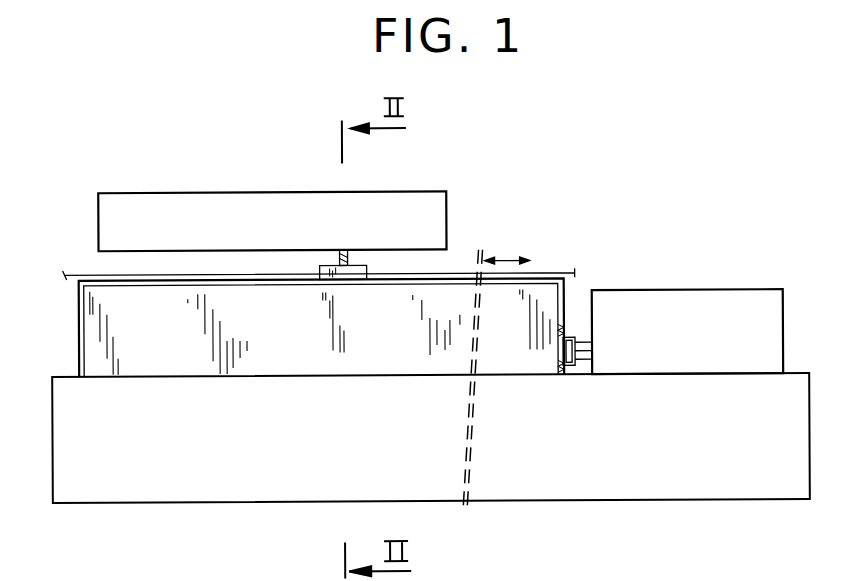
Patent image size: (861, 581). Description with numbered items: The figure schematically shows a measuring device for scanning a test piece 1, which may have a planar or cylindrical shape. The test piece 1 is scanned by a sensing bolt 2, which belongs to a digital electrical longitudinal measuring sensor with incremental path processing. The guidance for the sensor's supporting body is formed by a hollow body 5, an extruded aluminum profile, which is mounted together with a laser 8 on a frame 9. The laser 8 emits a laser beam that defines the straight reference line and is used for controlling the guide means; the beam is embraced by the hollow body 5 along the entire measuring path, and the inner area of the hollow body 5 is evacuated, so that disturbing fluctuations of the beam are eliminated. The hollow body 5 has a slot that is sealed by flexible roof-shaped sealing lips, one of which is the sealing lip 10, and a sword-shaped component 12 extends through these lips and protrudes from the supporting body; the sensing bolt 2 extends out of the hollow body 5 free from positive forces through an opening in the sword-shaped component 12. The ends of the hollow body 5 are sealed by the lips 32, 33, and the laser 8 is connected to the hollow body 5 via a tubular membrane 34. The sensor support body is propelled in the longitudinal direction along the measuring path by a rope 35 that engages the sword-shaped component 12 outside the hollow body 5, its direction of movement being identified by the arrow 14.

The test piece 1 is at (178, 212).
The sensing bolt 2 is at (325, 264).
The hollow body 5 is at (144, 303).
The laser 8 is at (753, 308).
The frame 9 is at (793, 388).
The sealing lip 10 is at (380, 285).
The sword-shaped component 12 is at (320, 273).
The arrow 14 is at (505, 257).
The lip 32 is at (79, 331).
The lip 33 is at (567, 333).
The tubular membrane 34 is at (571, 336).
The rope 35 is at (92, 275).